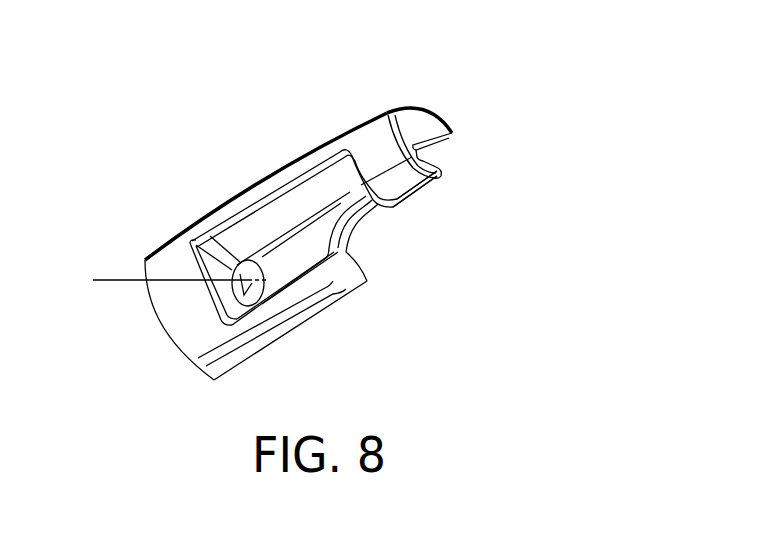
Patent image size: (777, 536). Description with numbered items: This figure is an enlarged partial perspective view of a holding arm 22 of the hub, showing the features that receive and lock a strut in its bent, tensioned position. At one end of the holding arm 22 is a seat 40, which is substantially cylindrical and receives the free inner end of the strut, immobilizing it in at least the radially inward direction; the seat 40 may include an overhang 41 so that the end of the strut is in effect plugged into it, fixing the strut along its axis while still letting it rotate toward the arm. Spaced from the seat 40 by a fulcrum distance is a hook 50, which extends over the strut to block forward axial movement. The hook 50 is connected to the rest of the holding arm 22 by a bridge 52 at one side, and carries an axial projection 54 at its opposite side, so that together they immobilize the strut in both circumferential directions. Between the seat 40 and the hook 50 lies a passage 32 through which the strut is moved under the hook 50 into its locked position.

The holding arm 22 is at (253, 188).
The passage 32 is at (365, 230).
The seat 40 is at (230, 266).
The overhang 41 is at (163, 281).
The hook 50 is at (420, 195).
The bridge 52 is at (420, 128).
The axial projection 54 is at (448, 137).